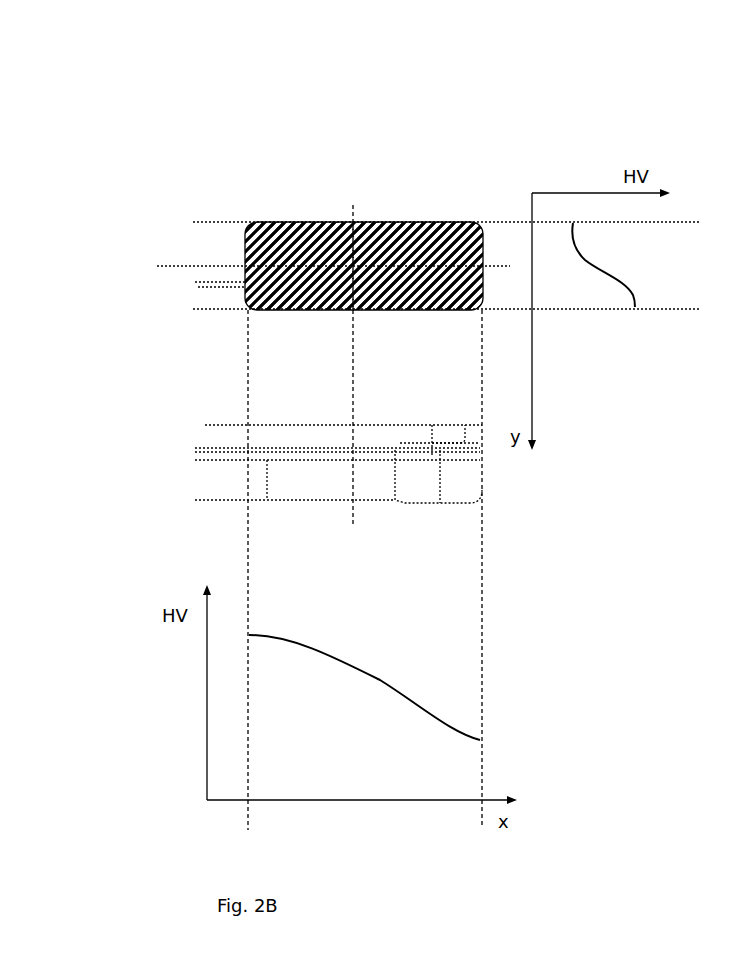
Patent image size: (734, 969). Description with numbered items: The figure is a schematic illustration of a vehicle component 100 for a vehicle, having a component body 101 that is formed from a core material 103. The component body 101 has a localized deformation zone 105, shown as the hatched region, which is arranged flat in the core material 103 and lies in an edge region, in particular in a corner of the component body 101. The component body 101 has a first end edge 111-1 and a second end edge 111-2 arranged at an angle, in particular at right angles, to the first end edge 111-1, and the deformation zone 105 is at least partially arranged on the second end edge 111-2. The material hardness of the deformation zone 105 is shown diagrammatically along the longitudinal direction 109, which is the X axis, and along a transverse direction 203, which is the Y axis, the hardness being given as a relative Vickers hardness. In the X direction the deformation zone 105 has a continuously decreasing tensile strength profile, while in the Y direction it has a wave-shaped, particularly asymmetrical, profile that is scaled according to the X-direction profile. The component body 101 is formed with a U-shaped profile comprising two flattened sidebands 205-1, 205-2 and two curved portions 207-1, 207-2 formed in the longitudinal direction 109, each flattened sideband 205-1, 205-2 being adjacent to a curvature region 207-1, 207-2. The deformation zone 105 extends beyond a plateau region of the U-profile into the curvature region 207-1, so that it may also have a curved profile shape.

The vehicle component 100 is at (261, 99).
The component body 101 is at (242, 222).
The core material 103 is at (208, 365).
The localized deformation zone 105 is at (418, 245).
The longitudinal direction 109 is at (314, 266).
The first end edge 111-1 is at (482, 250).
The second end edge 111-2 is at (303, 223).
The transverse direction 203 is at (355, 380).
The flattened sideband 205-1 is at (217, 248).
The flattened sideband 205-2 is at (210, 490).
The curved portion 207-1 is at (212, 293).
The curved portion 207-2 is at (218, 450).